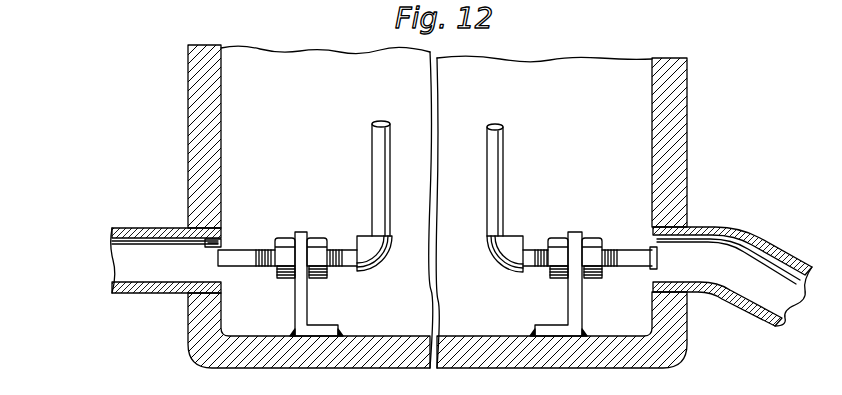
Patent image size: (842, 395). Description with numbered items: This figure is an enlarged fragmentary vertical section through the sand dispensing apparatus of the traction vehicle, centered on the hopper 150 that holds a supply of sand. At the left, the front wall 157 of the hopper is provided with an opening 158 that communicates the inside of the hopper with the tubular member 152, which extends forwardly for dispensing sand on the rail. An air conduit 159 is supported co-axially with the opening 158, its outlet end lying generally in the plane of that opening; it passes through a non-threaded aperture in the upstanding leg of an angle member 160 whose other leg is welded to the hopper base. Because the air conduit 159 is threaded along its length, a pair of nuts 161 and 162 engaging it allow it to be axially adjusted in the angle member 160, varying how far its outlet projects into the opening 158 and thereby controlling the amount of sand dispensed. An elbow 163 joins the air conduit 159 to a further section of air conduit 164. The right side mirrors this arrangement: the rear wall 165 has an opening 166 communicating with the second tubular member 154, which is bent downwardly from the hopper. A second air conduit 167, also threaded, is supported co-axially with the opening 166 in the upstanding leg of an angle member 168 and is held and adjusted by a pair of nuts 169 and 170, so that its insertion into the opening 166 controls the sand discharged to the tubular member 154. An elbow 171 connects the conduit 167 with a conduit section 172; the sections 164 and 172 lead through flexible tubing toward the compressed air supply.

The hopper 150 is at (444, 206).
The tubular member 152 is at (146, 229).
The second tubular member 154 is at (783, 250).
The front wall 157 is at (197, 118).
The opening 158 is at (222, 241).
The air conduit 159 is at (244, 268).
The angle member 160 is at (306, 298).
The nut 161 is at (283, 238).
The nut 162 is at (318, 238).
The elbow 163 is at (377, 262).
The air conduit section 164 is at (381, 153).
The rear wall 165 is at (660, 118).
The opening 166 is at (654, 241).
The second air conduit 167 is at (629, 258).
The angle member 168 is at (583, 305).
The nut 169 is at (556, 238).
The nut 170 is at (592, 238).
The elbow 171 is at (496, 269).
The conduit section 172 is at (494, 148).